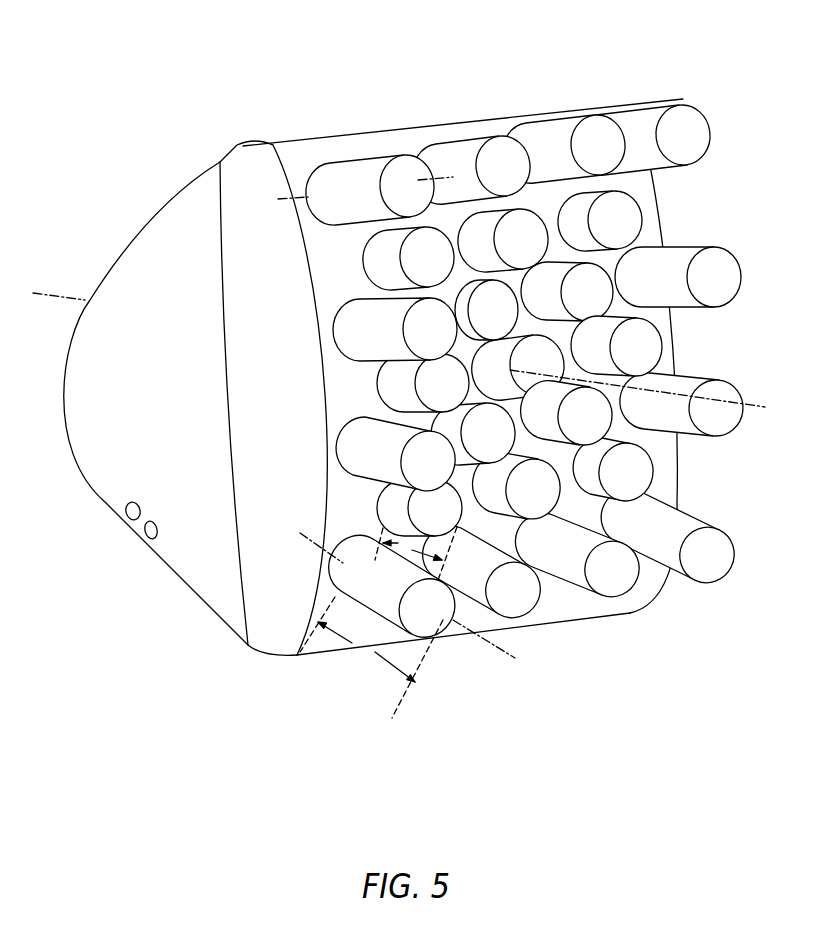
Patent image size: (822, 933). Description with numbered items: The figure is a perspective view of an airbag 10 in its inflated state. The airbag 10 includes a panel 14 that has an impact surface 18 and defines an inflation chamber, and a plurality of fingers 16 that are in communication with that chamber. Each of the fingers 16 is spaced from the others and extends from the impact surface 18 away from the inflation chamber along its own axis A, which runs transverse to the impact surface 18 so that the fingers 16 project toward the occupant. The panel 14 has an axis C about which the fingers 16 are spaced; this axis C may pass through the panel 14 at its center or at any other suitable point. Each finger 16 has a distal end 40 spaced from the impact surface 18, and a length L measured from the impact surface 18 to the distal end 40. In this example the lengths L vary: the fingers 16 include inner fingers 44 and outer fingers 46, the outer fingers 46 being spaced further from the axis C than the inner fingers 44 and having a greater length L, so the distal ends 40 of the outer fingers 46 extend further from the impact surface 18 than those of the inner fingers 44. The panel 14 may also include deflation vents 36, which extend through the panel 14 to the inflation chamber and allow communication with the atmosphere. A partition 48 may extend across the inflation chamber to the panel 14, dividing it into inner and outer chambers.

The airbag 10 is at (113, 118).
The panel 14 is at (157, 215).
The fingers 16 is at (735, 249).
The impact surface 18 is at (308, 170).
The deflation vents 36 is at (150, 538).
The distal end 40 is at (535, 474).
The inner fingers 44 is at (638, 478).
The outer fingers 46 is at (640, 120).
The partition 48 is at (222, 316).
The axis A is at (397, 420).
The axis C is at (400, 351).
The length L is at (378, 622).